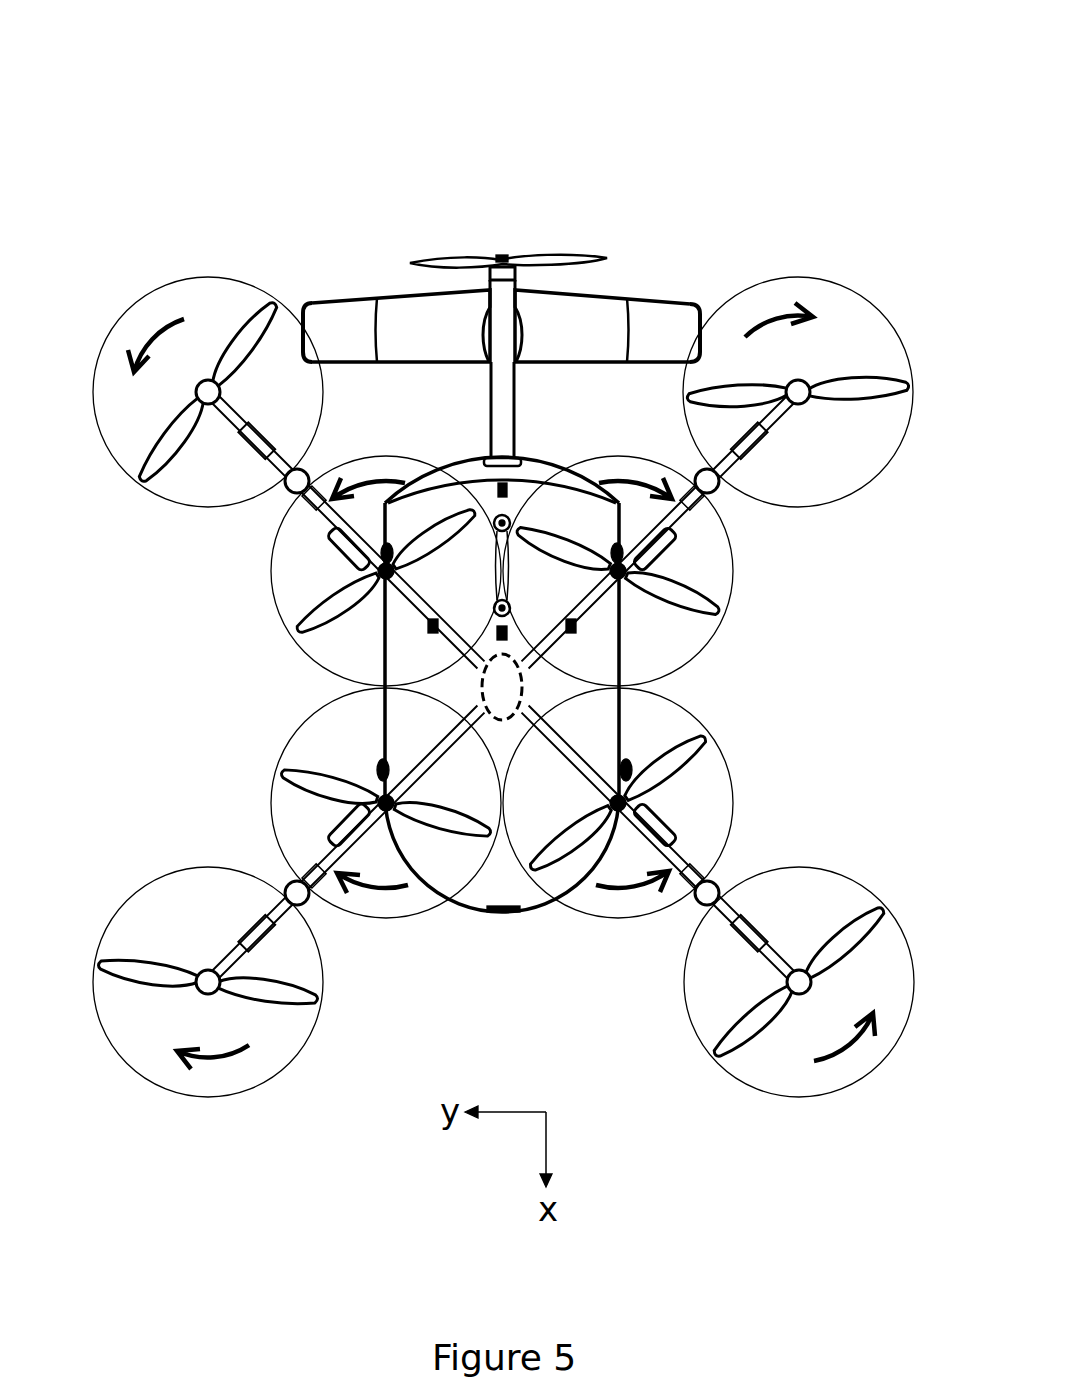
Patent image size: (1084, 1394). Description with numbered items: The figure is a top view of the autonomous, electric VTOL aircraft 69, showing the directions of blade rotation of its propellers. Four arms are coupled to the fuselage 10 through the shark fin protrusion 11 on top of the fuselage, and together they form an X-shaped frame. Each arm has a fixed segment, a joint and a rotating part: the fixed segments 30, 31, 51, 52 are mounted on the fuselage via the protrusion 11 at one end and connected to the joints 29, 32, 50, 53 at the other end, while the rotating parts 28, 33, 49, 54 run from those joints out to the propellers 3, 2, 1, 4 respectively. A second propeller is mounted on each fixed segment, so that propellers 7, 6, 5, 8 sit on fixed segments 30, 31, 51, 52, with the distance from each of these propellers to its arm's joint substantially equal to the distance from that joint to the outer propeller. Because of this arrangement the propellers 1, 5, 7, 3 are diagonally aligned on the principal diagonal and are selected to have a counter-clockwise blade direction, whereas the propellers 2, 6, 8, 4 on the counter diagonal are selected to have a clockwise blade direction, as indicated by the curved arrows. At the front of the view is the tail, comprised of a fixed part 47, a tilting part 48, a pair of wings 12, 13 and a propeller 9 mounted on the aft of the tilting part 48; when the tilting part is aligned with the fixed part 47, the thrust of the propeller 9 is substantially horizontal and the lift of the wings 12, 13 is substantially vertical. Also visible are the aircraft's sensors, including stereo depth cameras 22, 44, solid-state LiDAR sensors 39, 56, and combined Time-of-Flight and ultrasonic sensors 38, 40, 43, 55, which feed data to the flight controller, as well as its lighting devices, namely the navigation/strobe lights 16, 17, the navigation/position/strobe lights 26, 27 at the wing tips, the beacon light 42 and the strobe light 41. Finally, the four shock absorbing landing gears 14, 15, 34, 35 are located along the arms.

The VTOL aircraft 69 is at (502, 569).
The propeller 1 is at (238, 340).
The propeller 2 is at (840, 372).
The propeller 3 is at (768, 1020).
The propeller 4 is at (176, 990).
The propeller 5 is at (295, 622).
The propeller 6 is at (655, 580).
The propeller 7 is at (710, 738).
The propeller 8 is at (300, 774).
The propeller 9 is at (537, 250).
The fuselage 10 is at (523, 883).
The shark fin protrusion 11 is at (500, 687).
The wing 12 is at (405, 315).
The wing 13 is at (598, 316).
The shock absorbing landing gear 14 is at (350, 832).
The shock absorbing landing gear 15 is at (663, 825).
The navigation/strobe light 16 is at (378, 768).
The navigation/strobe light 17 is at (627, 770).
The stereo depth camera 22 is at (492, 912).
The navigation/position/strobe light 26 is at (306, 333).
The navigation/position/strobe light 27 is at (706, 333).
The rotating part 28 is at (760, 933).
The joint 29 is at (706, 895).
The fixed segment 30 is at (690, 863).
The fixed segment 31 is at (690, 520).
The joint 32 is at (718, 490).
The rotating part 33 is at (757, 442).
The shock absorbing landing gear 34 is at (668, 550).
The shock absorbing landing gear 35 is at (342, 545).
The combined Time-of-Flight and ultrasonic sensor 38 is at (617, 556).
The solid-state LiDAR sensor 39 is at (572, 632).
The combined Time-of-Flight and ultrasonic sensor 40 is at (498, 630).
The strobe light 41 is at (510, 606).
The beacon light 42 is at (496, 518).
The combined Time-of-Flight and ultrasonic sensor 43 is at (513, 480).
The stereo depth camera 44 is at (490, 463).
The fixed part 47 is at (505, 410).
The tilting part 48 is at (500, 330).
The rotating part 49 is at (242, 425).
The joint 50 is at (290, 486).
The fixed segment 51 is at (321, 508).
The fixed segment 52 is at (342, 868).
The joint 53 is at (300, 895).
The rotating part 54 is at (248, 938).
The combined Time-of-Flight and ultrasonic sensor 55 is at (392, 556).
The solid-state LiDAR sensor 56 is at (432, 632).